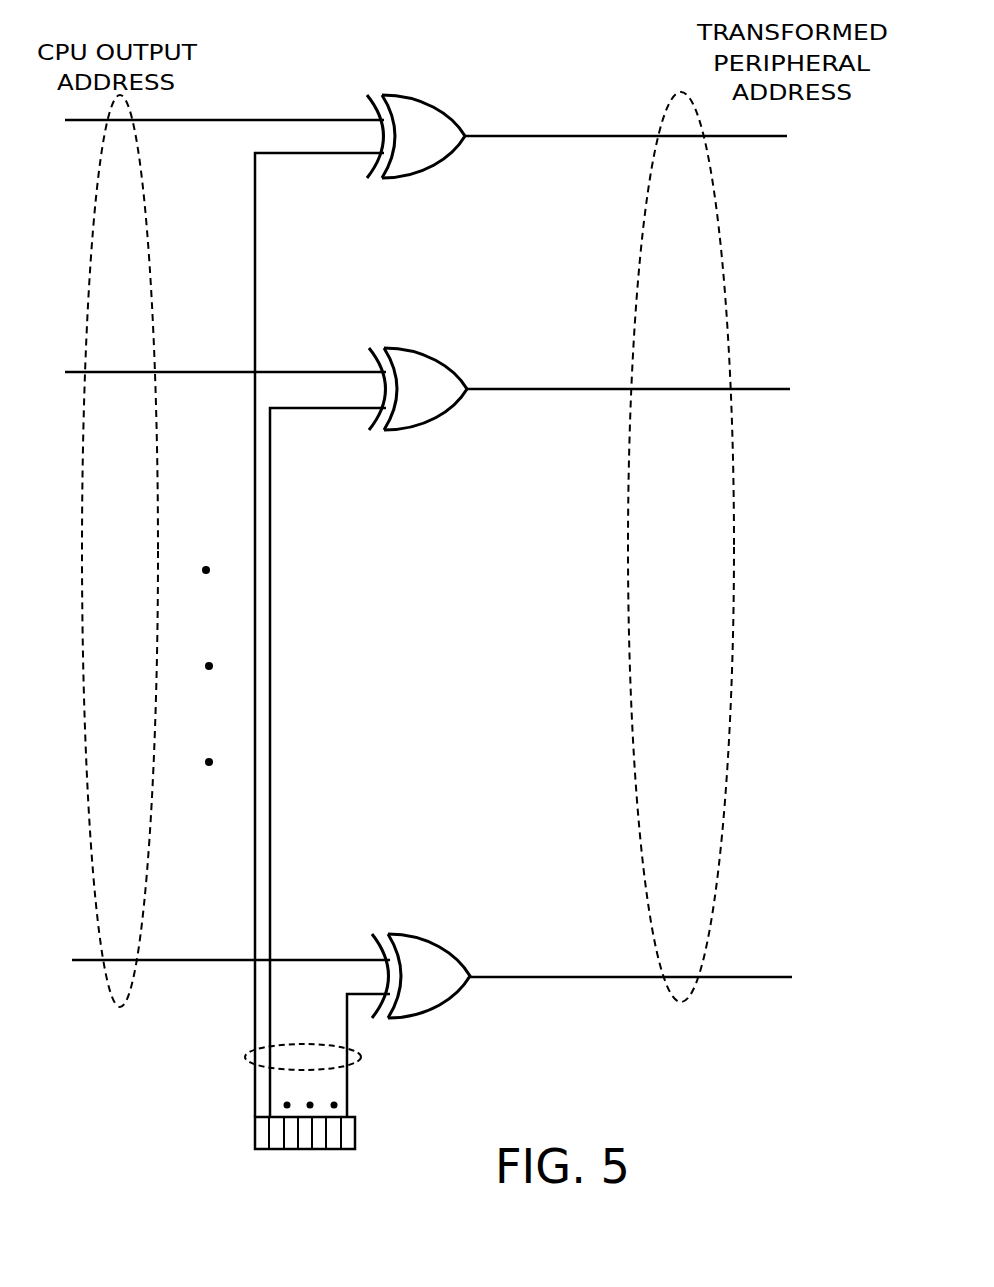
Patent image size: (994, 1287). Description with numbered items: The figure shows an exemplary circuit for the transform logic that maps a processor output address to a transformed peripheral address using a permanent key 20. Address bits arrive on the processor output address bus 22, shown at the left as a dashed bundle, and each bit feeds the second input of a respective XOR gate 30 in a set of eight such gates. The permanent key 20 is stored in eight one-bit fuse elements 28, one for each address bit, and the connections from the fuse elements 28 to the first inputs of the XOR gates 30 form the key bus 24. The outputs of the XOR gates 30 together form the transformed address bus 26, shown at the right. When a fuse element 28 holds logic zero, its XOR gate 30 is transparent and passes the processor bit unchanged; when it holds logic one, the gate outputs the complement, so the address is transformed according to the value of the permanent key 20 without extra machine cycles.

The permanent key 20 is at (355, 1152).
The processor output address bus 22 is at (123, 1007).
The key bus 24 is at (358, 1064).
The transformed address bus 26 is at (685, 1002).
The fuse elements 28 is at (255, 1130).
The XOR gates 30 is at (435, 118).